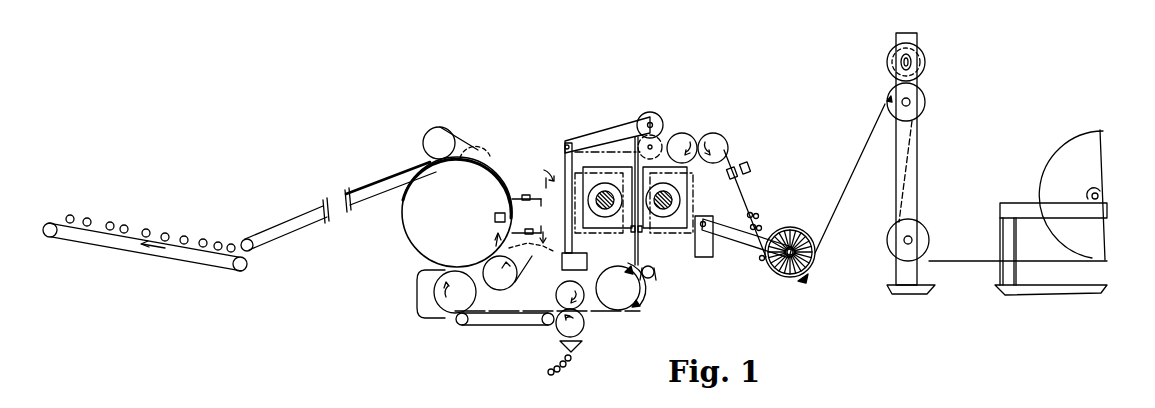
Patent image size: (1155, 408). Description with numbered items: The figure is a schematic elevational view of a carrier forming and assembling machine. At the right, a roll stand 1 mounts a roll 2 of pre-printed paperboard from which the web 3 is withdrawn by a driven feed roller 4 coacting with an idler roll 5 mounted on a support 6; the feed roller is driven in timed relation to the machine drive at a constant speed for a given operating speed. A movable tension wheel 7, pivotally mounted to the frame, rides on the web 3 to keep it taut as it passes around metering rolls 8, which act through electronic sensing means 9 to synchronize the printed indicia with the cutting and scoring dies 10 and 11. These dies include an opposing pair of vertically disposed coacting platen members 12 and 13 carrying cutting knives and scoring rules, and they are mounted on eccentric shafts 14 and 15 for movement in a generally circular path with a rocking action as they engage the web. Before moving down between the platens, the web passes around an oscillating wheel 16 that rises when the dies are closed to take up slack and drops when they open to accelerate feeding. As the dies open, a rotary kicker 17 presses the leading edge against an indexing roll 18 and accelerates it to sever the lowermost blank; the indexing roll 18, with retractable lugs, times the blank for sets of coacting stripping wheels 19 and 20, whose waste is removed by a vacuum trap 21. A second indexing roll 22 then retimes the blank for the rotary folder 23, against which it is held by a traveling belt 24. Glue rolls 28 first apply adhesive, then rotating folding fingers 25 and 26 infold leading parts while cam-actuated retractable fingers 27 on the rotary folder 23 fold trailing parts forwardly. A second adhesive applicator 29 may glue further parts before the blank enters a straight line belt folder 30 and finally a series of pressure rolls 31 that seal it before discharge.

The roll stand 1 is at (1007, 273).
The roll 2 is at (1074, 141).
The web 3 is at (963, 262).
The driven feed roller 4 is at (923, 56).
The idler roll 5 is at (924, 104).
The support 6 is at (920, 170).
The movable tension wheel 7 is at (793, 229).
The metering rolls 8 is at (712, 134).
The electronic sensing means 9 is at (752, 168).
The cutting and scoring die 10 is at (670, 233).
The cutting and scoring die 11 is at (611, 233).
The platen member 12 is at (647, 234).
The platen member 13 is at (634, 234).
The eccentric shaft 14 is at (672, 200).
The eccentric shaft 15 is at (599, 207).
The oscillating wheel 16 is at (651, 118).
The rotary kicker 17 is at (656, 274).
The indexing roll 18 is at (641, 294).
The stripping wheels 19 is at (578, 285).
The stripping wheels 20 is at (584, 326).
The vacuum trap 21 is at (580, 348).
The second indexing roll 22 is at (425, 295).
The rotary folder 23 is at (452, 242).
The traveling belt 24 is at (456, 150).
The rotating folding fingers 25 is at (537, 228).
The rotating folding fingers 26 is at (528, 196).
The retractable fingers 27 is at (500, 213).
The glue rolls 28 is at (538, 247).
The second adhesive applicator 29 is at (478, 154).
The straight line belt folder 30 is at (353, 203).
The pressure rolls 31 is at (146, 233).